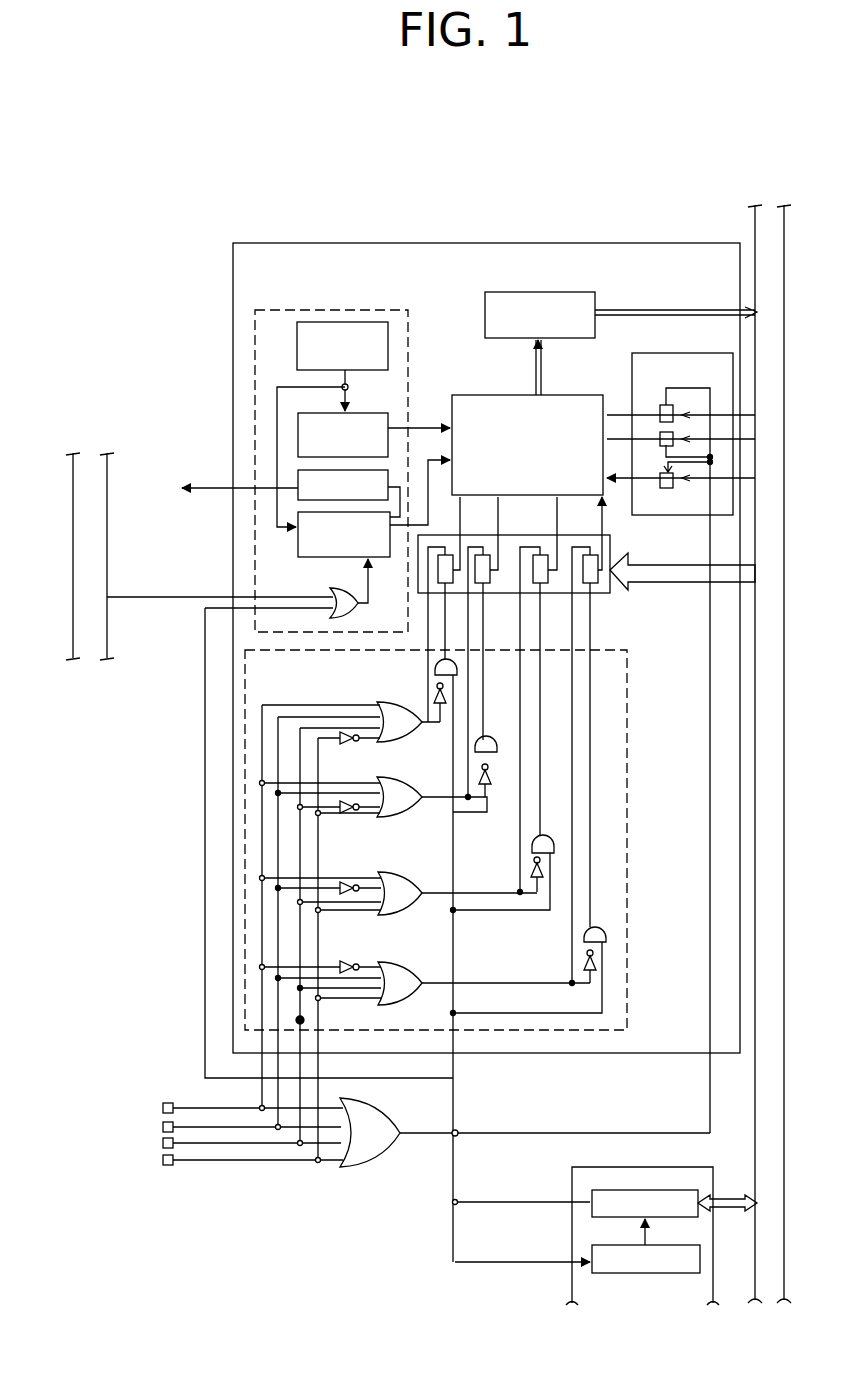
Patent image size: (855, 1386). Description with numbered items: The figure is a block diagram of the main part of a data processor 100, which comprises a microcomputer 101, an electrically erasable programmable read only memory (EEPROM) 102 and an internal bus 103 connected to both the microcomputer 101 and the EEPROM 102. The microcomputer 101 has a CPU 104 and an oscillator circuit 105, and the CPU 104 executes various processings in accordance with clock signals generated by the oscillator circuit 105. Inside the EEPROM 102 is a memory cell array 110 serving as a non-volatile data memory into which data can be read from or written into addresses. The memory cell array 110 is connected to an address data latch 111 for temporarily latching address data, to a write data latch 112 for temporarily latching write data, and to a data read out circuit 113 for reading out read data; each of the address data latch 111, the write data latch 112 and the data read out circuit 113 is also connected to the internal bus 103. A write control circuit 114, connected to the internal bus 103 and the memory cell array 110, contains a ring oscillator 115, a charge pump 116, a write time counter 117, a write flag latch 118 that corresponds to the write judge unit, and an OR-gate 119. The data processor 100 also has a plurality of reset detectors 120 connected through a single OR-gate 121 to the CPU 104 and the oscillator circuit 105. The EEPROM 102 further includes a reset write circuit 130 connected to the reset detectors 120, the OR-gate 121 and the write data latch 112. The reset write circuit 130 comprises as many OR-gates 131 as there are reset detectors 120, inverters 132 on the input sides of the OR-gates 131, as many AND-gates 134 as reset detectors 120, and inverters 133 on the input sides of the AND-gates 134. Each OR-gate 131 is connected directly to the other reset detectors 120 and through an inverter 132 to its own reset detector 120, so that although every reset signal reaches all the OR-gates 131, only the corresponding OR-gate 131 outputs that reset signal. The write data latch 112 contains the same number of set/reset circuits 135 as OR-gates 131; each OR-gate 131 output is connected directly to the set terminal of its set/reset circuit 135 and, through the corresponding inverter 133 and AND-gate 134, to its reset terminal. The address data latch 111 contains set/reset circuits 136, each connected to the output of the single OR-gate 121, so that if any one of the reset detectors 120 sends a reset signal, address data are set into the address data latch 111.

The data processor 100 is at (510, 226).
The microcomputer 101 is at (572, 1167).
The electrically erasable programmable read only memory (EEPROM) 102 is at (355, 243).
The internal bus 103 is at (107, 487).
The CPU 104 is at (633, 1218).
The oscillator circuit 105 is at (667, 1273).
The memory cell array 110 is at (500, 395).
The address data latch 111 is at (650, 352).
The write data latch 112 is at (608, 593).
The data read out circuit 113 is at (568, 292).
The write control circuit 114 is at (303, 308).
The ring oscillator 115 is at (388, 330).
The charge pump 116 is at (388, 413).
The write time counter 117 is at (335, 557).
The write flag latch 118 is at (297, 478).
The OR-gate 119 is at (356, 606).
The reset detectors 120 is at (166, 1102).
The OR-gate 121 is at (358, 1163).
The reset write circuit 130 is at (627, 742).
The OR-gates 131 is at (395, 703).
The inverters 132 is at (347, 744).
The inverters 133 is at (455, 690).
The AND-gates 134 is at (430, 722).
The set/reset circuits 135 is at (590, 555).
The set/reset circuits 136 is at (660, 437).